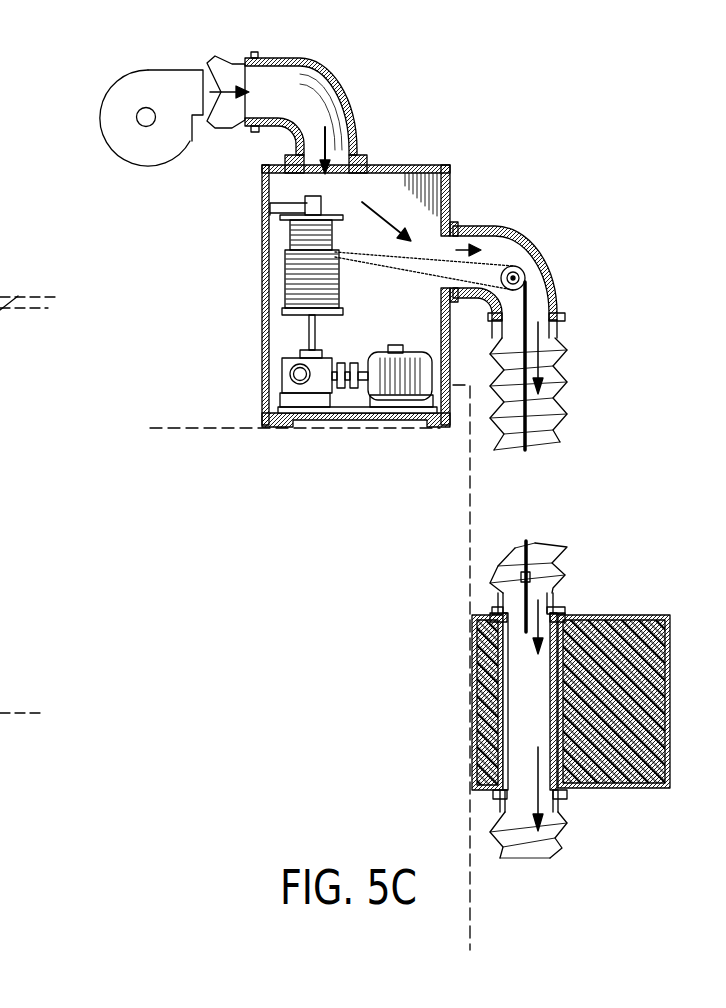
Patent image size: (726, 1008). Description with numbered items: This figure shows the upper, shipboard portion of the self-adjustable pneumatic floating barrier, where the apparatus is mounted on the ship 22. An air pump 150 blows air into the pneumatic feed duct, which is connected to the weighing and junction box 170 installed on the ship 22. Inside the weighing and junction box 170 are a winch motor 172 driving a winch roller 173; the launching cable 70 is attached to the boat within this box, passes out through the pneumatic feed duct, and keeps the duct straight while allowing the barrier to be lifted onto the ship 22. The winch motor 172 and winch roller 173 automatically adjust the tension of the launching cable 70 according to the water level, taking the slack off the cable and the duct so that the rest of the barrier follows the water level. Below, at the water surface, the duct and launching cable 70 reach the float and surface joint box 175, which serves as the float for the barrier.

The air pump 150 is at (118, 92).
The weighing and junction box 170 is at (388, 167).
The launching cable 70 is at (413, 255).
The winch roller 173 is at (285, 258).
The winch motor 172 is at (393, 400).
The ship 22 is at (430, 520).
The float and surface joint box 175 is at (613, 615).